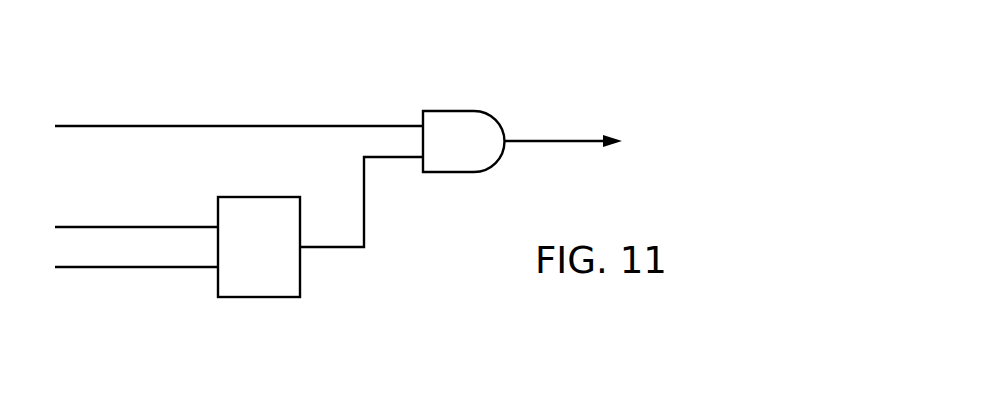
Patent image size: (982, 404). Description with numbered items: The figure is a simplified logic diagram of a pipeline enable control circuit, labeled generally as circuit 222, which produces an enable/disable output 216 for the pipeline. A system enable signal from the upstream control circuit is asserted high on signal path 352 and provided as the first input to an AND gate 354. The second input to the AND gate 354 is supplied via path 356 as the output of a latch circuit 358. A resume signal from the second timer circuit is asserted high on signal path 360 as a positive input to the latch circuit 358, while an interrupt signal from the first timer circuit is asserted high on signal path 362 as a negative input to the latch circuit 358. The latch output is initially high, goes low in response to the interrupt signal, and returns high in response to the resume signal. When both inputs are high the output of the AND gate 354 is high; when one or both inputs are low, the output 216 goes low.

The enable/disable logic circuit 222 is at (598, 35).
The signal path 352 is at (123, 127).
The AND gate 354 is at (450, 110).
The path 356 is at (365, 212).
The latch circuit 358 is at (252, 196).
The signal path 360 is at (183, 226).
The signal path 362 is at (165, 268).
The enable/disable output signal 216 is at (560, 142).